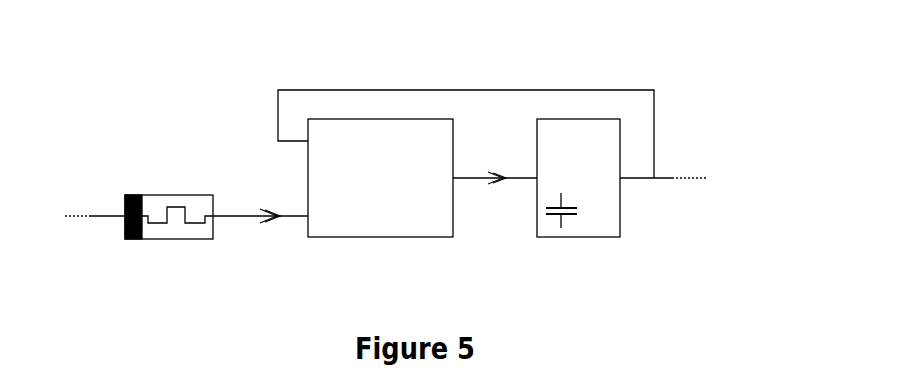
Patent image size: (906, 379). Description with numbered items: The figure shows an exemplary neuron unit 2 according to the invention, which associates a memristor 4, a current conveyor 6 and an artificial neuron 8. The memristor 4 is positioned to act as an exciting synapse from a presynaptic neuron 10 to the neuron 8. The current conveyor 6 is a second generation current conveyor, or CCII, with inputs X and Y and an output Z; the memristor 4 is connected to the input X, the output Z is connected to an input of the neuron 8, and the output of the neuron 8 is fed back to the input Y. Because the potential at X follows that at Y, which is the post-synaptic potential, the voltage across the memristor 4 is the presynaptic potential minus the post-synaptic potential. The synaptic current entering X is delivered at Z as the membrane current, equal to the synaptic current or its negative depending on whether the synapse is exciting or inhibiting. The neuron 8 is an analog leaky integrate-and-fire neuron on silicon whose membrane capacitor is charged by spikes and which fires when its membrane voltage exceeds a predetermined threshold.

The neuron unit 2 is at (707, 70).
The neuron 10 is at (105, 216).
The memristor 4 is at (188, 239).
The current conveyor 6 is at (379, 237).
The artificial neuron 8 is at (577, 237).